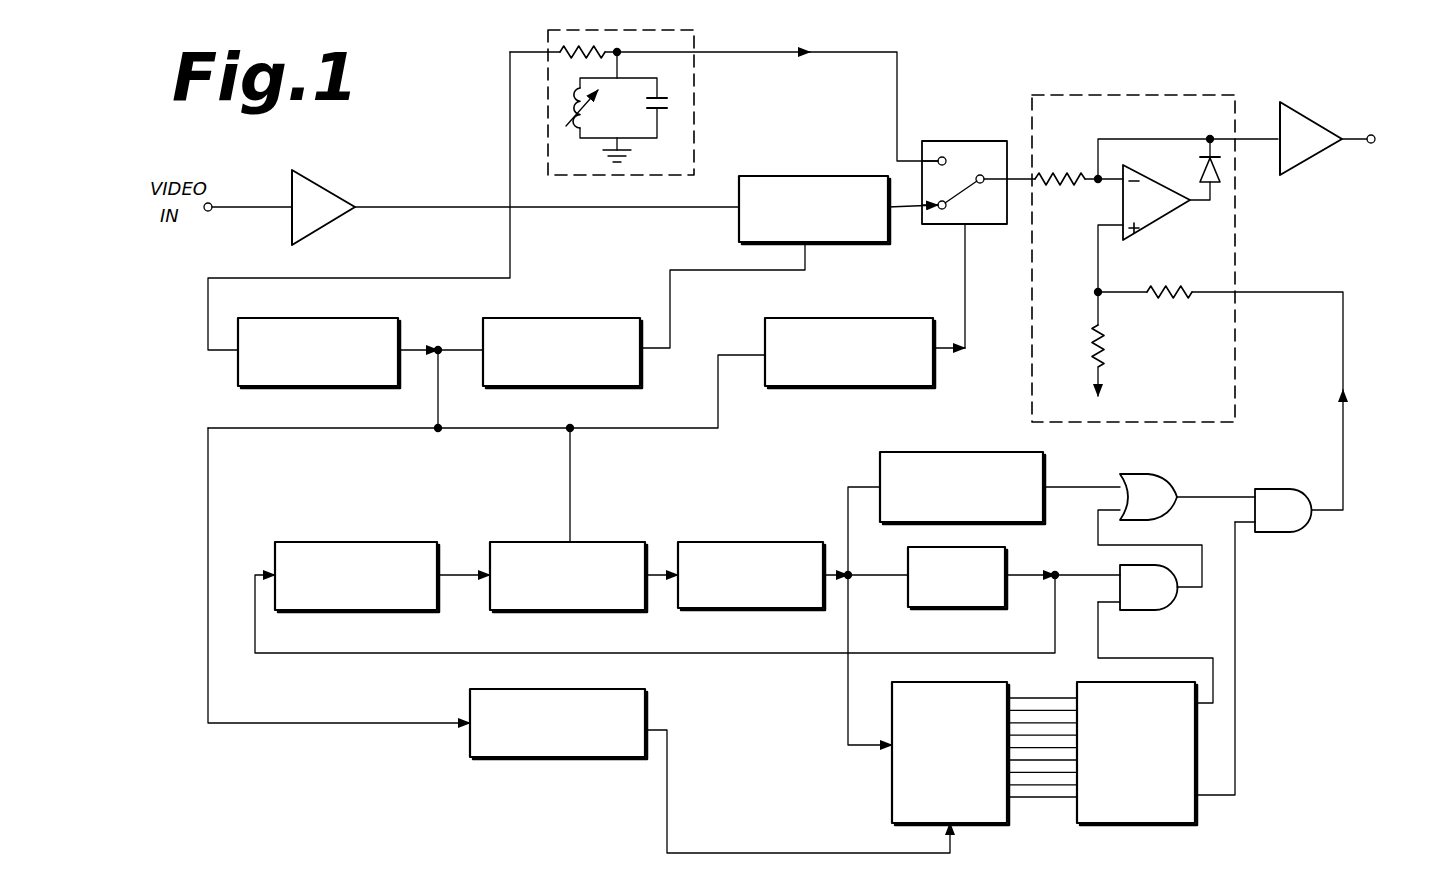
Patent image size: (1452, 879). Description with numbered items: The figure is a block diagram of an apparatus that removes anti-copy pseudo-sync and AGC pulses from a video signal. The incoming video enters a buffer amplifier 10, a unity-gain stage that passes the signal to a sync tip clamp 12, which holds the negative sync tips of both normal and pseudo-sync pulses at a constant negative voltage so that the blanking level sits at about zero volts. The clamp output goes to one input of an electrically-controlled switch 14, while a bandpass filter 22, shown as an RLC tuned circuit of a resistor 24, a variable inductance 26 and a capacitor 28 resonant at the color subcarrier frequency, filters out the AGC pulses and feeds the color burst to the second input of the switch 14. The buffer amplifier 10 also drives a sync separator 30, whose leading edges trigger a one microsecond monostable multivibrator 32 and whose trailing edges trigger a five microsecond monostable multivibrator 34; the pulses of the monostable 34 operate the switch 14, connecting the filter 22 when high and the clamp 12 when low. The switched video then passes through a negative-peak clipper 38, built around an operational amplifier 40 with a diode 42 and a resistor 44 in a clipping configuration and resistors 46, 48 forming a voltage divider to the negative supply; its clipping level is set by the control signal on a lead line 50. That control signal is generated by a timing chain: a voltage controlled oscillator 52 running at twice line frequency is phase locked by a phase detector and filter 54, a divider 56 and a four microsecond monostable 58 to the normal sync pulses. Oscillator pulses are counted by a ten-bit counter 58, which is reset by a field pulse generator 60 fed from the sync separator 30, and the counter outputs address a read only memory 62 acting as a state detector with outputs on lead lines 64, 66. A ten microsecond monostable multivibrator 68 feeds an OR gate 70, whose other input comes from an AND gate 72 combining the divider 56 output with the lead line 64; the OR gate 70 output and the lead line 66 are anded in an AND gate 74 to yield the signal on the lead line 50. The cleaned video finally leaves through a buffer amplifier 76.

The buffer amplifier 10 is at (318, 190).
The sync tip clamp 12 is at (807, 176).
The electrically-controlled switch 14 is at (965, 141).
The bandpass filter 22 is at (608, 92).
The resistor 24 is at (562, 52).
The variable inductance 26 is at (566, 122).
The capacitor 28 is at (672, 106).
The sync separator 30 is at (352, 318).
The monostable multivibrator 32 is at (551, 318).
The monostable multivibrator 34 is at (807, 318).
The negative-peak clipper 38 is at (1155, 244).
The operational amplifier 40 is at (1168, 206).
The diode 42 is at (1224, 181).
The resistor 44 is at (1060, 157).
The resistor 46 is at (1160, 292).
The resistor 48 is at (1104, 348).
The lead line 50 is at (1285, 292).
The voltage controlled oscillator 52 is at (740, 542).
The phase detector and filter 54 is at (590, 542).
The divider 56 is at (925, 609).
The 4 microsecond monostable / ten-bit counter 58 is at (360, 542).
The field pulse generator 60 is at (500, 759).
The read only memory device 62 is at (1145, 825).
The lead line 64 is at (1165, 658).
The lead line 66 is at (1235, 641).
The ten microsecond monostable multivibrator 68 is at (985, 452).
The OR gate 70 is at (1160, 481).
The AND gate 72 is at (1148, 610).
The AND gate 74 is at (1278, 489).
The buffer amplifier 76 is at (1305, 118).